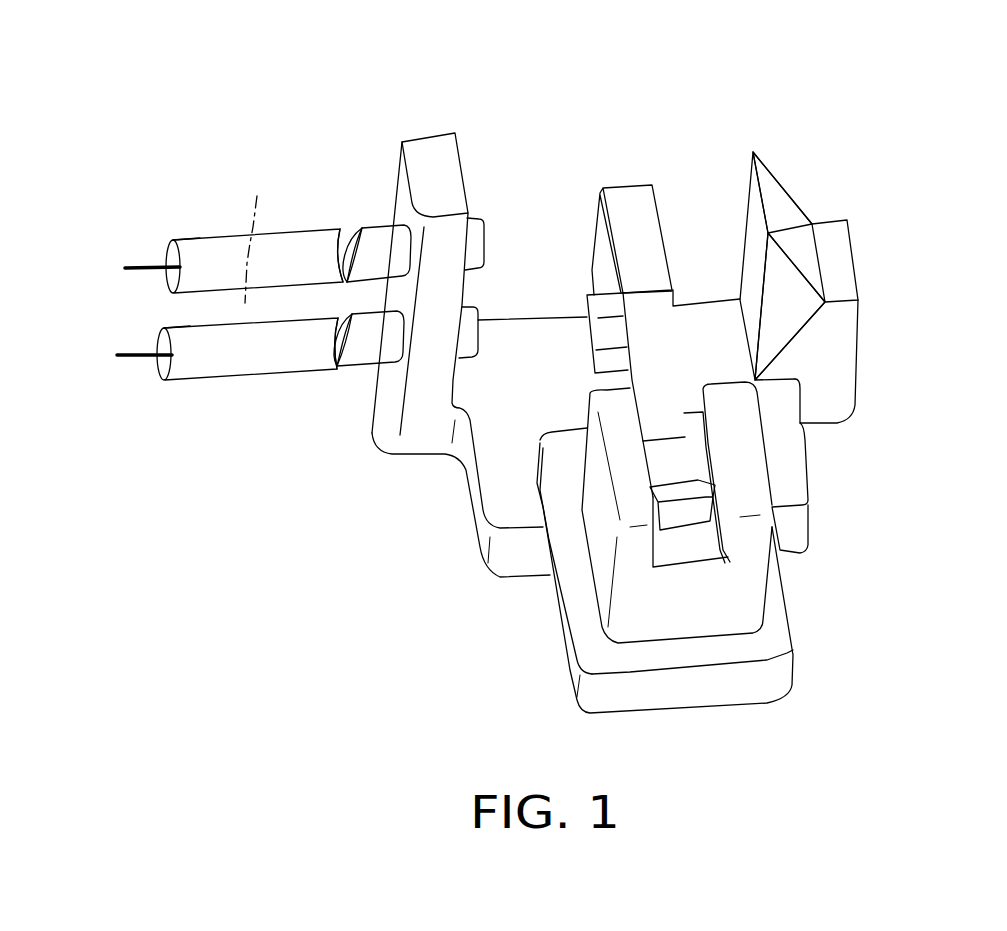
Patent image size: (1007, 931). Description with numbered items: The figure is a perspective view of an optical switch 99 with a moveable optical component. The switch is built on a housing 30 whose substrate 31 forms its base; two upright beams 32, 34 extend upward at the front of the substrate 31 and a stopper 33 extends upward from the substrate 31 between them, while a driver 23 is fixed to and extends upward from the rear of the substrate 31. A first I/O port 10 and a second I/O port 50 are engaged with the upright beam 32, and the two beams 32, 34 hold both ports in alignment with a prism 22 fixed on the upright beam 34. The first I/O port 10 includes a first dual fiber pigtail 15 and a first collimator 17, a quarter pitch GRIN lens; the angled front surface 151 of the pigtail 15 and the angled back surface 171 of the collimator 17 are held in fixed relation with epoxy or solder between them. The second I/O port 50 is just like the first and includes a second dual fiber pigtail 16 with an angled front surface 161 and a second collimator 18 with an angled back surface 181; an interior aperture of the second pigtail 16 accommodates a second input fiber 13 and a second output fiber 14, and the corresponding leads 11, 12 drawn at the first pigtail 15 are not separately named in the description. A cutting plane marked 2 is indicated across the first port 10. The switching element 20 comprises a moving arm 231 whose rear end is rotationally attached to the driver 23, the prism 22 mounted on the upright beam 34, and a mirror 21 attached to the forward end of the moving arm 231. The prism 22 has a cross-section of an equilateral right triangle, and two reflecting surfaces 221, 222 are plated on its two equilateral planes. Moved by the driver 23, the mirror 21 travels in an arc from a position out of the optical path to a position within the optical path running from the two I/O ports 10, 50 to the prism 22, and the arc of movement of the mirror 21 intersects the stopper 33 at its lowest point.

The optical switch 99 is at (572, 58).
The first I/O port 10 is at (175, 206).
The core of first optical fiber 11 is at (147, 266).
The cladding of first optical fiber 12 is at (153, 269).
The second input fiber 13 is at (140, 354).
The second output fiber 14 is at (150, 352).
The first DFP (dual fiber pigtail) 15 is at (213, 237).
The angled front surface 151 is at (342, 257).
The second DFP (dual fiber pigtail) 16 is at (207, 381).
The angled front surface 161 is at (327, 350).
The first collimator 17 is at (393, 223).
The angled back surface 171 is at (360, 247).
The second collimator 18 is at (367, 367).
The angled back surface 181 is at (343, 368).
The section line 2- 2 is at (281, 303).
The switching element 20 is at (887, 48).
The mirror 21 is at (597, 247).
The prism 22 is at (800, 250).
The reflecting surface 221 is at (778, 212).
The reflecting surface 222 is at (793, 340).
The driver 23 is at (782, 575).
The moving arm 231 is at (640, 237).
The housing 30 is at (429, 480).
The substrate 31 is at (490, 468).
The upright beam 32 is at (430, 150).
The stopper 33 is at (586, 317).
The upright beam 34 is at (818, 360).
The second I/O port 50 is at (166, 399).